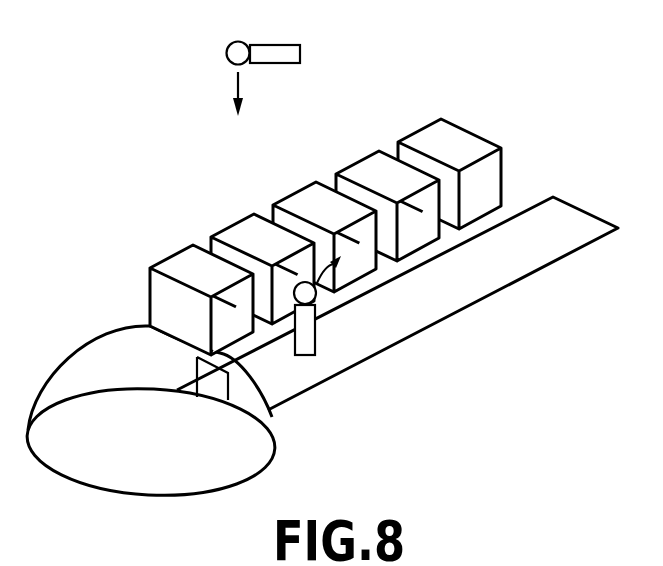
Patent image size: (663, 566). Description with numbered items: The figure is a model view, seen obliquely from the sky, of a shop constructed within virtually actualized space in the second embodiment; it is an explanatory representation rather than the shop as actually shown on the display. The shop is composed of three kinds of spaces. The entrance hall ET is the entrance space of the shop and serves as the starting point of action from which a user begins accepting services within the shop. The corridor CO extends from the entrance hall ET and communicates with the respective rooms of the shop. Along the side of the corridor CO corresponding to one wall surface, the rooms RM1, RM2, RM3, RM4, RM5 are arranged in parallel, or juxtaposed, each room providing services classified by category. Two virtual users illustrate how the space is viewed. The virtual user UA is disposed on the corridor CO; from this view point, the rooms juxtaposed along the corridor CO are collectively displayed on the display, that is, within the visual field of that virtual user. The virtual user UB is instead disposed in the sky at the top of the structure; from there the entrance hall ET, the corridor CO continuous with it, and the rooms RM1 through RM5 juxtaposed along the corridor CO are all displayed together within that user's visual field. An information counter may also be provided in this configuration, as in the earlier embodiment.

The room RM1 is at (182, 256).
The room RM2 is at (233, 228).
The room RM3 is at (300, 192).
The room RM4 is at (367, 163).
The room RM5 is at (427, 127).
The corridor CO is at (522, 270).
The entrance hall ET is at (150, 414).
The virtual user UA is at (308, 350).
The virtual user UB is at (300, 53).